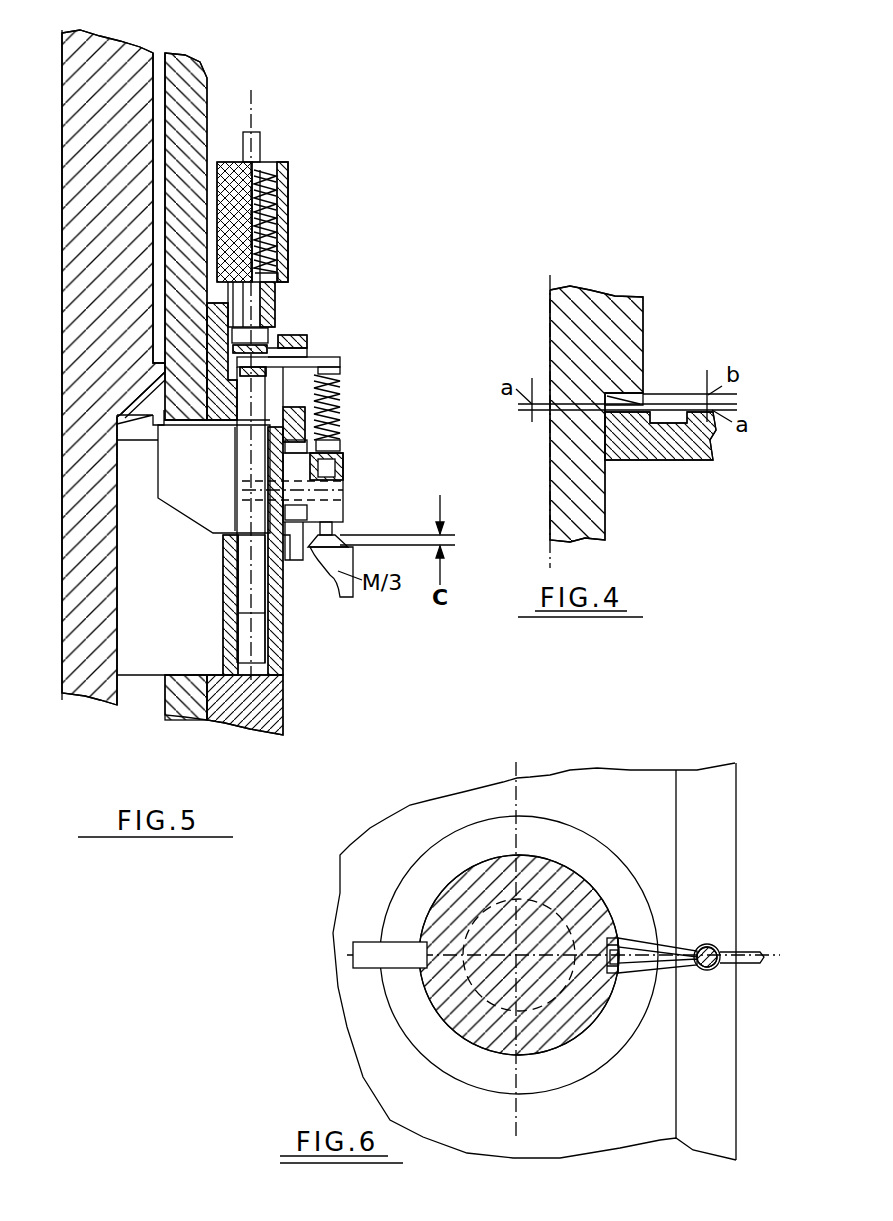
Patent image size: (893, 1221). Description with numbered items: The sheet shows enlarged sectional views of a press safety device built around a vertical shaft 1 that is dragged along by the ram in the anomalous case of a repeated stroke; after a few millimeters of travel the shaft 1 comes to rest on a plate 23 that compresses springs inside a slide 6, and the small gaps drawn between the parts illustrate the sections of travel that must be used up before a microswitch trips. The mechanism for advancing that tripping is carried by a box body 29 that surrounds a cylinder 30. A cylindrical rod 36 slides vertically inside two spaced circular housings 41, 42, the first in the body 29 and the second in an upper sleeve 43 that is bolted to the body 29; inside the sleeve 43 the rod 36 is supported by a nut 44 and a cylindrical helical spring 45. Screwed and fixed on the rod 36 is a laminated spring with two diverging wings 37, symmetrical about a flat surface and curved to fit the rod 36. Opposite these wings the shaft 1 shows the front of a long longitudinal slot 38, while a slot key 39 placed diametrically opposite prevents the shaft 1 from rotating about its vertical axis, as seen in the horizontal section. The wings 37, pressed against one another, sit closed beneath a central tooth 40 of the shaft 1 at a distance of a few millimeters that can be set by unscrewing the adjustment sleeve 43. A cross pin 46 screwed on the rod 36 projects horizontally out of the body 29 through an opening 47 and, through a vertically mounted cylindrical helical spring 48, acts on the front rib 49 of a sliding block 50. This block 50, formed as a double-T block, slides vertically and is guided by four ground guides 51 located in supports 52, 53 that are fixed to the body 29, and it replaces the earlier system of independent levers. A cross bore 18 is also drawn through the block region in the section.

In FIG. 5, the shaft 1 is at (128, 88).
In FIG. 4, the shaft 1 is at (584, 298).
In FIG. 6, the shaft 1 is at (462, 920).
In FIG. 5, the slide 6 is at (183, 566).
In FIG. 5, the cross bore 18 is at (318, 496).
In FIG. 4, the plate 23 is at (652, 462).
In FIG. 5, the body 29 is at (230, 392).
In FIG. 6, the body 29 is at (640, 808).
In FIG. 5, the cylinder 30 is at (193, 75).
In FIG. 6, the cylinder 30 is at (490, 853).
In FIG. 5, the cylindrical rod 36 is at (252, 140).
In FIG. 6, the cylindrical rod 36 is at (722, 963).
In FIG. 5, the diverging wings 37 is at (216, 480).
In FIG. 6, the diverging wings 37 is at (665, 948).
In FIG. 5, the longitudinal slot 38 is at (156, 58).
In FIG. 6, the longitudinal slot 38 is at (613, 942).
In FIG. 6, the slot key 39 is at (397, 955).
In FIG. 5, the central tooth 40 is at (162, 404).
In FIG. 6, the central tooth 40 is at (614, 973).
In FIG. 5, the circular housing 41 is at (262, 645).
In FIG. 5, the circular housing 42 is at (263, 307).
In FIG. 5, the upper sleeve 43 is at (240, 165).
In FIG. 5, the nut 44 is at (289, 166).
In FIG. 5, the cylindrical helical spring 45 is at (279, 216).
In FIG. 5, the cross pin 46 is at (337, 362).
In FIG. 6, the cross pin 46 is at (746, 953).
In FIG. 5, the opening 47 is at (275, 383).
In FIG. 5, the cylindrical helical spring 48 is at (326, 406).
In FIG. 5, the front rib 49 is at (298, 513).
In FIG. 5, the sliding block 50 is at (310, 512).
In FIG. 5, the ground guides 51 is at (293, 428).
In FIG. 5, the support 52 is at (298, 342).
In FIG. 5, the support 53 is at (294, 562).